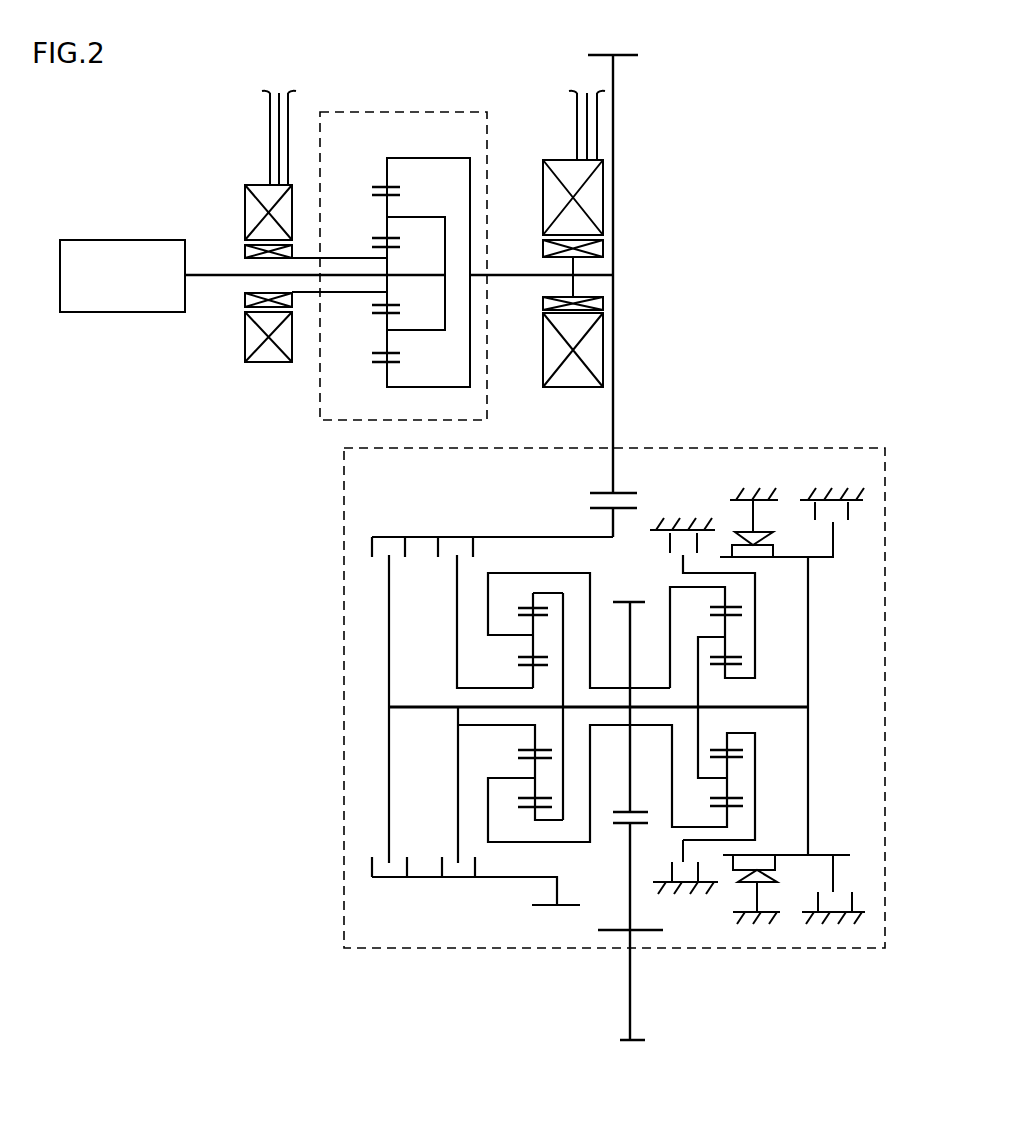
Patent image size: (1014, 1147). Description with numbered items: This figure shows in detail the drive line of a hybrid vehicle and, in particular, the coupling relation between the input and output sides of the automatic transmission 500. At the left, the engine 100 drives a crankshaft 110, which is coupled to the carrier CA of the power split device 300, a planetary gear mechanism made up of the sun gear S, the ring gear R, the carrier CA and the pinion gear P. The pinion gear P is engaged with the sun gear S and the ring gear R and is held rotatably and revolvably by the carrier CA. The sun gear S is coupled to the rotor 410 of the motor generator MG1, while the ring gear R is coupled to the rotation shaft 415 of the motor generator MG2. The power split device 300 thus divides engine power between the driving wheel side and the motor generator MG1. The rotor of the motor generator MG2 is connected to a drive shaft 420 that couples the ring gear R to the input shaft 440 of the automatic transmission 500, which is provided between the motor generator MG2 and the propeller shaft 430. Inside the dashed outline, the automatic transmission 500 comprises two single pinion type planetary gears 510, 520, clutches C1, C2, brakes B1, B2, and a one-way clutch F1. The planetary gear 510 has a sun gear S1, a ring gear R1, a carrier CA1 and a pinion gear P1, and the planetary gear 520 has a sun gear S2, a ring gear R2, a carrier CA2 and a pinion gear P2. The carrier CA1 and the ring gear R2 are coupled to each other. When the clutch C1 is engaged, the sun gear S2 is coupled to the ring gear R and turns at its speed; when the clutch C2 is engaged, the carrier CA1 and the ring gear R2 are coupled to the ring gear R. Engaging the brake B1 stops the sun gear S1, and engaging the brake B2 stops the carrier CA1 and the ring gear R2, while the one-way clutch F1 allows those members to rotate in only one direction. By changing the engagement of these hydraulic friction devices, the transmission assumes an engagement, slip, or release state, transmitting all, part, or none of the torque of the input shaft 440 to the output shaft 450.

The engine 100 is at (185, 240).
The crankshaft 110 is at (205, 278).
The power split device 300 is at (441, 108).
The rotor 410 is at (245, 306).
The rotation shaft 415 is at (543, 300).
The drive shaft 420 is at (511, 272).
The propeller shaft 430 is at (634, 990).
The input shaft 440 is at (494, 535).
The output shaft 450 is at (630, 763).
The automatic transmission 500 is at (848, 445).
The planetary gear 510 is at (772, 640).
The planetary gear 520 is at (516, 856).
The motor generator MG1 is at (258, 363).
The motor generator MG2 is at (568, 388).
The ring gear R is at (382, 183).
The pinion gear P is at (382, 200).
The carrier CA is at (437, 217).
The sun gear S is at (392, 248).
The clutch C1 is at (455, 536).
The clutch C2 is at (388, 536).
The brake B1 is at (684, 692).
The brake B2 is at (794, 692).
The one-way clutch F1 is at (776, 692).
The ring gear R1 is at (718, 607).
The pinion gear P1 is at (735, 653).
The carrier CA1 is at (720, 633).
The sun gear S1 is at (717, 668).
The ring gear R2 is at (522, 608).
The pinion gear P2 is at (517, 663).
The carrier CA2 is at (520, 637).
The sun gear S2 is at (543, 667).